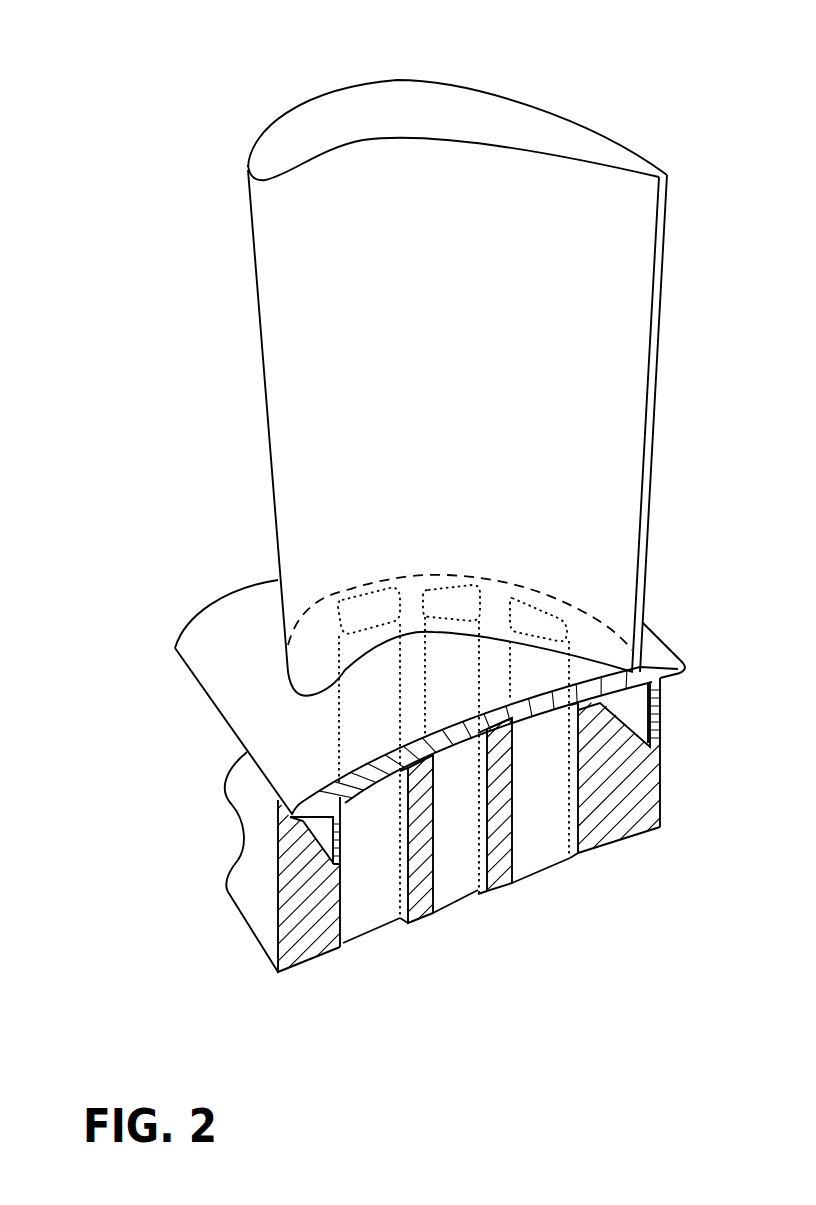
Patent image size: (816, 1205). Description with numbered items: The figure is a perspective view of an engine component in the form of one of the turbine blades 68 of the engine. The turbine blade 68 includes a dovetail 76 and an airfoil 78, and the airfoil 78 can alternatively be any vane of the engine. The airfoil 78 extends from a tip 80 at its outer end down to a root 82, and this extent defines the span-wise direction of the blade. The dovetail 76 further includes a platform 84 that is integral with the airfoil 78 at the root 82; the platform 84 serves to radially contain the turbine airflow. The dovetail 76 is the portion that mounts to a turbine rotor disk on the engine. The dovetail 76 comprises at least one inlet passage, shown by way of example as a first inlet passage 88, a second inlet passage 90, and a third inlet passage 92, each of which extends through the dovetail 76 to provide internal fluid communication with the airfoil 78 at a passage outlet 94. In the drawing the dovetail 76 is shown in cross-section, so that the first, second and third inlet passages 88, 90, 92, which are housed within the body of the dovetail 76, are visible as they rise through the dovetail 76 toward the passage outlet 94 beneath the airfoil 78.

The turbine blade 68 is at (104, 183).
The dovetail 76 is at (268, 855).
The airfoil 78 is at (256, 463).
The tip 80 is at (343, 120).
The root 82 is at (596, 650).
The platform 84 is at (243, 683).
The first inlet passage 88 is at (378, 958).
The second inlet passage 90 is at (461, 936).
The third inlet passage 92 is at (539, 902).
The passage outlet 94 is at (360, 590).